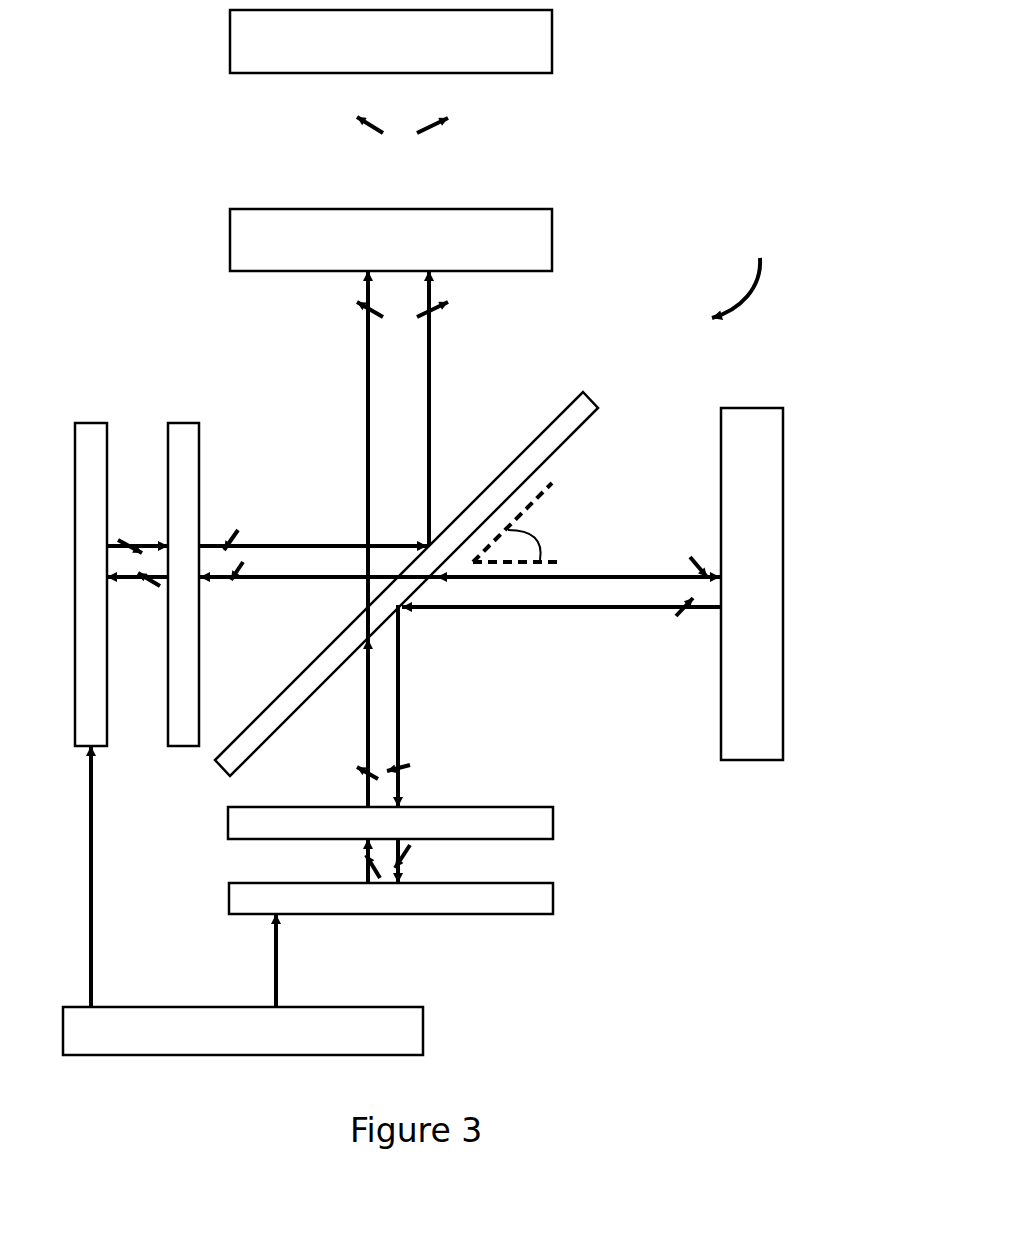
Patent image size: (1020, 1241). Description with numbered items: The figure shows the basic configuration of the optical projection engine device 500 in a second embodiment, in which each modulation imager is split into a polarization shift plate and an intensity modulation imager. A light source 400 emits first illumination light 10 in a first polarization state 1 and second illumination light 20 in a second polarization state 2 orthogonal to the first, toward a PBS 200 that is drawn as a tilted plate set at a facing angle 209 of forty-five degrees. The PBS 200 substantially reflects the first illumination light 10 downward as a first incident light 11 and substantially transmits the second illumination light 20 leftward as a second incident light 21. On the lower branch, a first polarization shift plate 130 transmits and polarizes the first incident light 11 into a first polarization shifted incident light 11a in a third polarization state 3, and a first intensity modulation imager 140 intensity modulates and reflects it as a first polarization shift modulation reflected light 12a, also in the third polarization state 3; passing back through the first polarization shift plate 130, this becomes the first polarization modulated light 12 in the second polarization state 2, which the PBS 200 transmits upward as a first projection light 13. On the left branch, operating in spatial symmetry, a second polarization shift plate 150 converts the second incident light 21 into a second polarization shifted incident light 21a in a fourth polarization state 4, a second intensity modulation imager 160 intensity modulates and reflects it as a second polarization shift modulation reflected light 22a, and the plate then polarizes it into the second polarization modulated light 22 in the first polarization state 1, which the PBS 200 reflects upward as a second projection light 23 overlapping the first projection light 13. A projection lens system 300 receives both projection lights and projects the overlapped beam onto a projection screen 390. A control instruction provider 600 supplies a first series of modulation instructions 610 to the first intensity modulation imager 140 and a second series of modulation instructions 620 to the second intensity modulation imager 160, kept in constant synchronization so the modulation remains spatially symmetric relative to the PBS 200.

The projection screen 390 is at (552, 43).
The projection lens system 300 is at (552, 243).
The optical projection engine device 500 is at (752, 272).
The light source 400 is at (757, 760).
The control instruction provider 600 is at (423, 1028).
The second intensity modulation imager 160 is at (90, 423).
The second polarization shift plate 150 is at (183, 423).
The first polarization shift plate 130 is at (553, 807).
The first intensity modulation imager 140 is at (553, 893).
The PBS 200 is at (220, 767).
The facing angle 209 is at (530, 528).
The first projection light 13 is at (368, 370).
The second projection light 23 is at (429, 345).
The second polarization modulated light 22 is at (330, 545).
The second polarization shift modulation reflected light 22a is at (143, 547).
The second incident light 21 is at (330, 582).
The second polarization shifted incident light 21a is at (133, 580).
The second illumination light 20 is at (655, 575).
The first illumination light 10 is at (640, 612).
The first polarization modulated light 12 is at (367, 742).
The first incident light 11 is at (398, 727).
The first polarization shift modulation reflected light 12a is at (375, 883).
The first polarization shifted incident light 11a is at (403, 863).
The second series of modulation instructions 620 is at (91, 960).
The first series of modulation instructions 610 is at (277, 980).
The first polarization state 1 is at (224, 545).
The second polarization state 2 is at (240, 582).
The third polarization state 3 is at (365, 862).
The fourth polarization state 4 is at (128, 540).